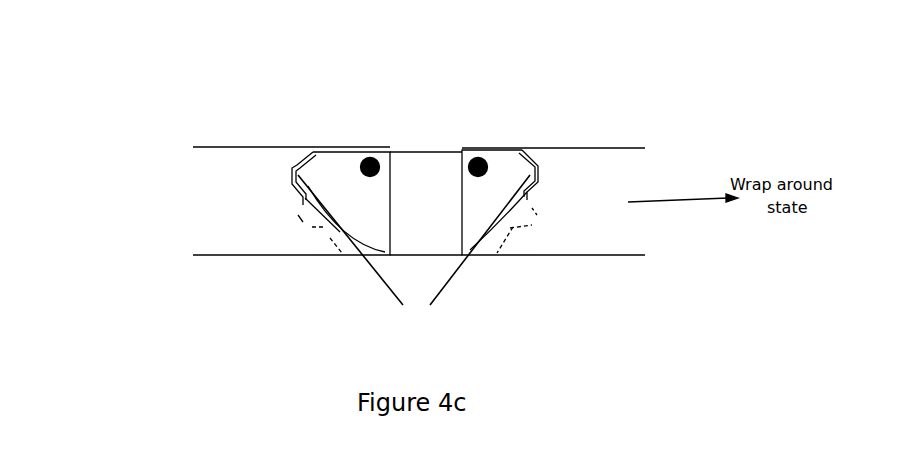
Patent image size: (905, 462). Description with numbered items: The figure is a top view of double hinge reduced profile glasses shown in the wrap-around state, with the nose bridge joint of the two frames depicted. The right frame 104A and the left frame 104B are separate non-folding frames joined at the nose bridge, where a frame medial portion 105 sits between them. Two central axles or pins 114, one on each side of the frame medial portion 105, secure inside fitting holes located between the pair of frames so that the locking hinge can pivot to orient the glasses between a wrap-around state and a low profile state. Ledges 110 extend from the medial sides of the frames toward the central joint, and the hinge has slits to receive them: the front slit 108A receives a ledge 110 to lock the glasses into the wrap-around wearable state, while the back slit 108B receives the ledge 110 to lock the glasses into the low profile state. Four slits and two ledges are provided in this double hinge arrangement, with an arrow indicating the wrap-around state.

The right frame 104A is at (607, 187).
The left frame 104B is at (212, 193).
The frame medial portion 105 is at (417, 158).
The front slit 108A is at (292, 168).
The back slit 108B is at (302, 218).
The ledge 110 is at (414, 254).
The central axle or pin 114 is at (365, 157).